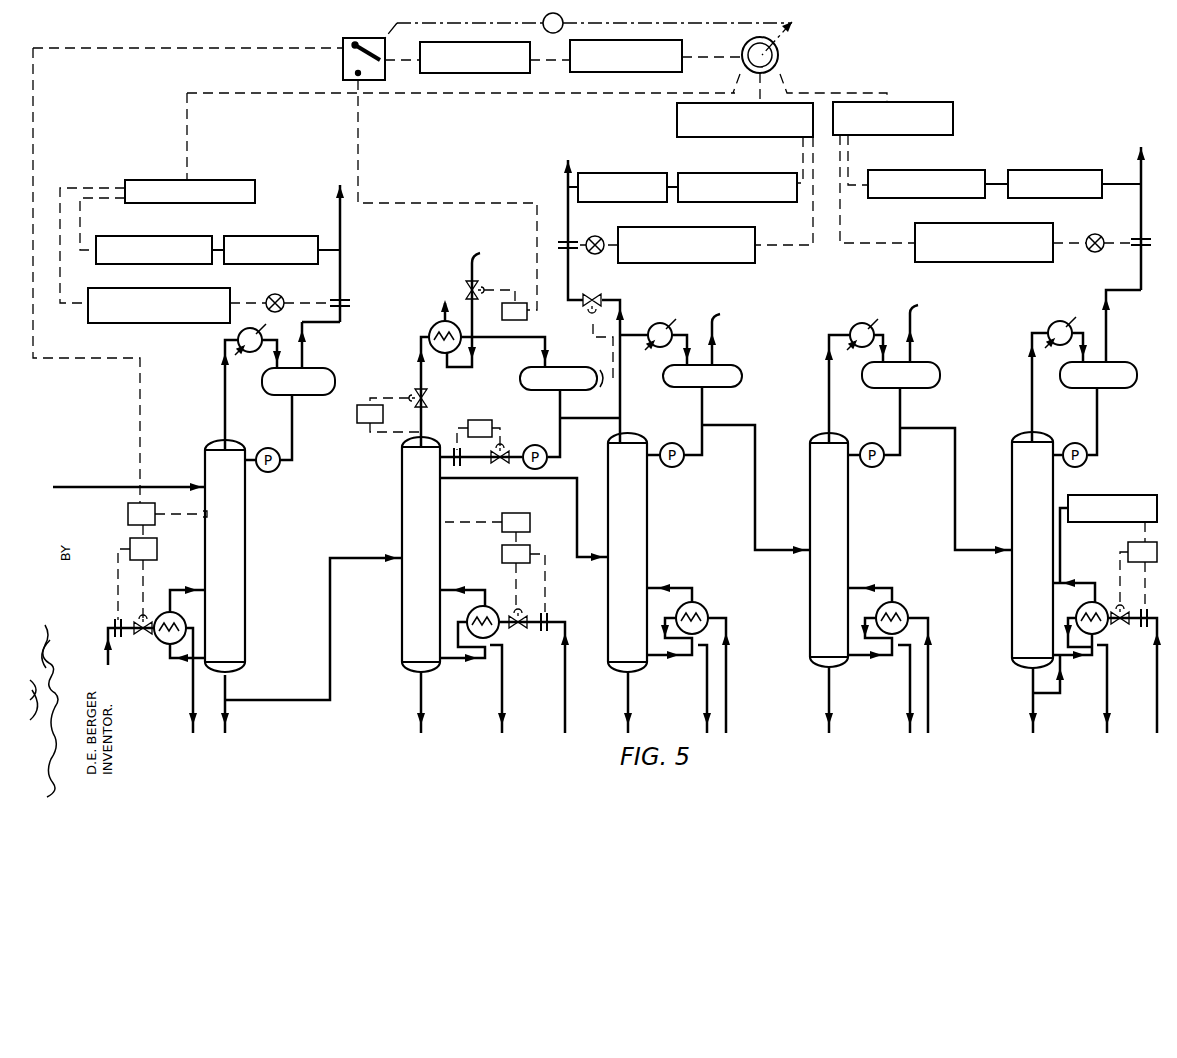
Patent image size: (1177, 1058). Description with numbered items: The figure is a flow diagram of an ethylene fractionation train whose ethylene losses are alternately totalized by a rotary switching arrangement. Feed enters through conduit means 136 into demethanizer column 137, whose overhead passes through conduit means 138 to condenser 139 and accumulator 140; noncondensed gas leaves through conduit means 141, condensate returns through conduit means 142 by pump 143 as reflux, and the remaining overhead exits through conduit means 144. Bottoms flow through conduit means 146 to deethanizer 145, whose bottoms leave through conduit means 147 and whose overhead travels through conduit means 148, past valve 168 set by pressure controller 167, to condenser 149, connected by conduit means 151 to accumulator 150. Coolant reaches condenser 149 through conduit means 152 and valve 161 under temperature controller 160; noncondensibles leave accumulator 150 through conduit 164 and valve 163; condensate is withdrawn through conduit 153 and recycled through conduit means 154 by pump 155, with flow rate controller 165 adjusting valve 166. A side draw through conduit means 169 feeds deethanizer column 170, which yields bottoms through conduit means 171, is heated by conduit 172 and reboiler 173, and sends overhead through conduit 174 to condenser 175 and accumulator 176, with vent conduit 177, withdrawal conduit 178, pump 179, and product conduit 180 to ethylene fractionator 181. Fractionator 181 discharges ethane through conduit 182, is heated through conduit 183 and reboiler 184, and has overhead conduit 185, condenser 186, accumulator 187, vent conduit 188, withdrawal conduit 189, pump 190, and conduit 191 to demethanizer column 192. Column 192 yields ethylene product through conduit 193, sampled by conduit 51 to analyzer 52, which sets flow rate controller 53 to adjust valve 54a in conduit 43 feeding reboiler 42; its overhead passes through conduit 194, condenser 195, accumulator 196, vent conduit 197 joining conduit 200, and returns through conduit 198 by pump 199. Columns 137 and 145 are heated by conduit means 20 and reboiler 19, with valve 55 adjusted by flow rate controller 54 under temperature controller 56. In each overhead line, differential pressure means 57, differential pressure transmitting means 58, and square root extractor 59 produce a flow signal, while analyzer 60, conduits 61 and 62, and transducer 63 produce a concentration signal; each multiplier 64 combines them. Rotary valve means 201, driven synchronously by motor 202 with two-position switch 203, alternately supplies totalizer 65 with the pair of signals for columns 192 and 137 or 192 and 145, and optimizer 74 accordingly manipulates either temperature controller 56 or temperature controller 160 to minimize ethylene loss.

The reboiler 19 is at (165, 641).
The conduit means 20 is at (112, 664).
The reboiler 42 is at (1100, 602).
The conduit 43 is at (1157, 722).
The conduit 51 is at (1060, 538).
The analyzer 52 is at (1098, 494).
The flow rate controller 53 is at (1138, 542).
The flow rate controller 54 is at (157, 552).
The valve 54a is at (1112, 626).
The valve 55 is at (148, 628).
The temperature controller 56 is at (128, 517).
The differential pressure means 57 is at (344, 298).
The differential pressure transmitting means 58 is at (280, 294).
The square root extractor 59 is at (112, 290).
The analyzer 60 is at (276, 236).
The conduit 61 is at (326, 240).
The conduit 62 is at (220, 236).
The transducer 63 is at (142, 236).
The multiplier 64 is at (250, 180).
The totalizer 65 is at (682, 70).
The optimizer 74 is at (530, 70).
The conduit means 136 is at (104, 490).
The demethanizer column 137 is at (225, 556).
The conduit means 138 is at (220, 343).
The condenser 139 is at (270, 326).
The accumulator 140 is at (260, 368).
The conduit means 141 is at (306, 342).
The conduit means 142 is at (292, 462).
The pump 143 is at (275, 470).
The conduit means 144 is at (340, 268).
The deethanizer 145 is at (402, 480).
The conduit means 146 is at (290, 700).
The conduit means 147 is at (424, 722).
The conduit means 148 is at (424, 420).
The condenser 149 is at (434, 322).
The accumulator 150 is at (528, 363).
The conduit means 151 is at (506, 334).
The conduit means 152 is at (480, 304).
The conduit 153 is at (560, 446).
The conduit means 154 is at (462, 466).
The pump 155 is at (547, 466).
The temperature controller 160 is at (520, 320).
The valve 161 is at (462, 288).
The valve 163 is at (596, 296).
The conduit 164 is at (622, 310).
The flow rate controller 165 is at (492, 424).
The valve 166 is at (510, 452).
The pressure controller 167 is at (383, 412).
The valve 168 is at (428, 396).
The conduit means 169 is at (578, 500).
The deethanizer column 170 is at (627, 552).
The conduit means 171 is at (630, 722).
The conduit 172 is at (728, 720).
The reboiler 173 is at (700, 606).
The conduit 174 is at (630, 420).
The condenser 175 is at (668, 330).
The accumulator 176 is at (725, 366).
The conduit 177 is at (716, 332).
The conduit 178 is at (702, 448).
The pump 179 is at (680, 466).
The conduit 180 is at (796, 555).
The ethylene fractionator 181 is at (810, 472).
The conduit 182 is at (832, 722).
The conduit 183 is at (930, 720).
The reboiler 184 is at (902, 606).
The conduit 185 is at (830, 412).
The condenser 186 is at (852, 332).
The accumulator 187 is at (920, 366).
The conduit 188 is at (914, 332).
The conduit 189 is at (900, 448).
The pump 190 is at (882, 466).
The conduit 191 is at (955, 492).
The demethanizer column 192 is at (1032, 550).
The conduit 193 is at (1036, 724).
The conduit 194 is at (1032, 378).
The condenser 195 is at (1052, 322).
The accumulator 196 is at (1084, 392).
The conduit 197 is at (1108, 325).
The conduit 198 is at (1097, 446).
The pump 199 is at (1085, 464).
The conduit 200 is at (1140, 210).
The rotary valve means 201 is at (778, 55).
The motor 202 is at (540, 31).
The two-position switch 203 is at (343, 60).